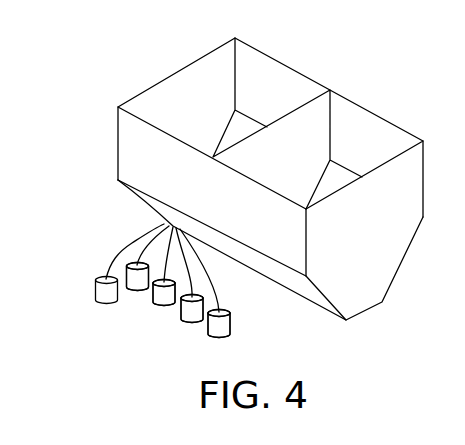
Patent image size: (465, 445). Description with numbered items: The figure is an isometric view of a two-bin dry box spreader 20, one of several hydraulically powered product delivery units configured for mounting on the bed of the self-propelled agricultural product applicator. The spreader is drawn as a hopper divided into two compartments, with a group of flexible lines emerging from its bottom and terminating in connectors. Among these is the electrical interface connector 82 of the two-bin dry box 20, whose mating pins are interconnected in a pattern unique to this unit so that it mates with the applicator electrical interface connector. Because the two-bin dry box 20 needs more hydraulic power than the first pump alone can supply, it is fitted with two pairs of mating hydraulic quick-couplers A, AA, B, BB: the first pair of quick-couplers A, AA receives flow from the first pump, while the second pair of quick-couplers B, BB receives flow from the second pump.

The two-bin dry box spreader 20 is at (338, 51).
The electrical interface connector 82 is at (95, 283).
The hydraulic quick-coupler A is at (137, 291).
The hydraulic quick-coupler AA is at (164, 306).
The hydraulic quick-coupler B is at (192, 323).
The hydraulic quick-coupler BB is at (222, 340).